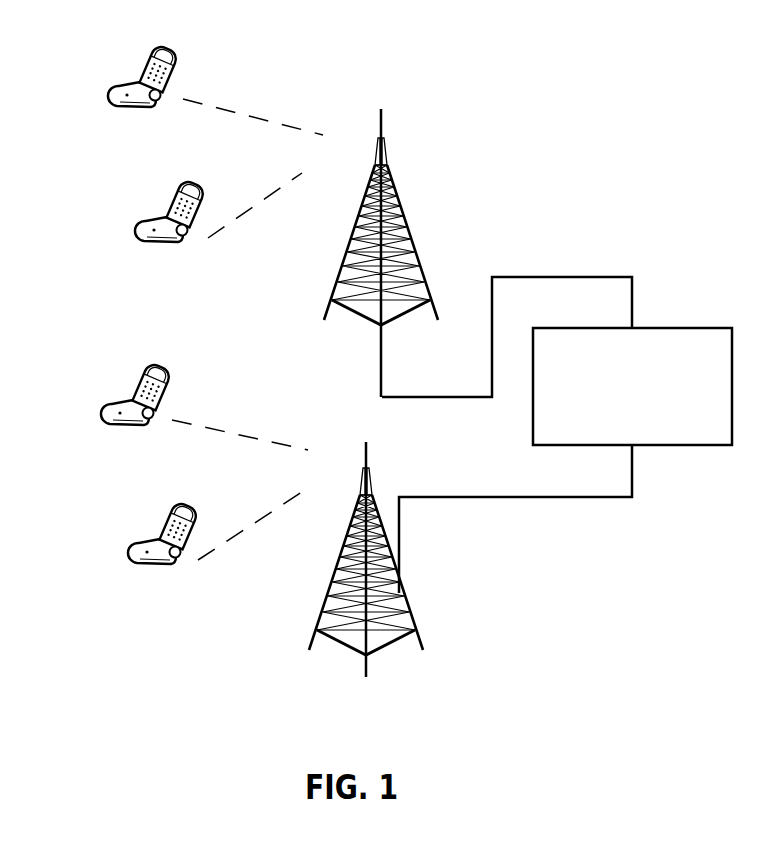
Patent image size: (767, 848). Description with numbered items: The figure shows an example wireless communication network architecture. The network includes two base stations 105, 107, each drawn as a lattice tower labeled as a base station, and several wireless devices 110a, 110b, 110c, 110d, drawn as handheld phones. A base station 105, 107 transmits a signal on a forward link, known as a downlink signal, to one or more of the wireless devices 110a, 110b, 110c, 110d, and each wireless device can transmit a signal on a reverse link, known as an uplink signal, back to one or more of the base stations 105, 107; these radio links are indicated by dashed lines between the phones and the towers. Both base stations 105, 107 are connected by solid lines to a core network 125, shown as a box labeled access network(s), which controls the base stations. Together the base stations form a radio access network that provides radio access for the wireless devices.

The wireless device 110a is at (131, 53).
The wireless device 110b is at (156, 193).
The wireless device 110c is at (121, 373).
The wireless device 110d is at (149, 513).
The base station 105 is at (389, 188).
The base station 107 is at (369, 478).
The core network 125 is at (546, 325).